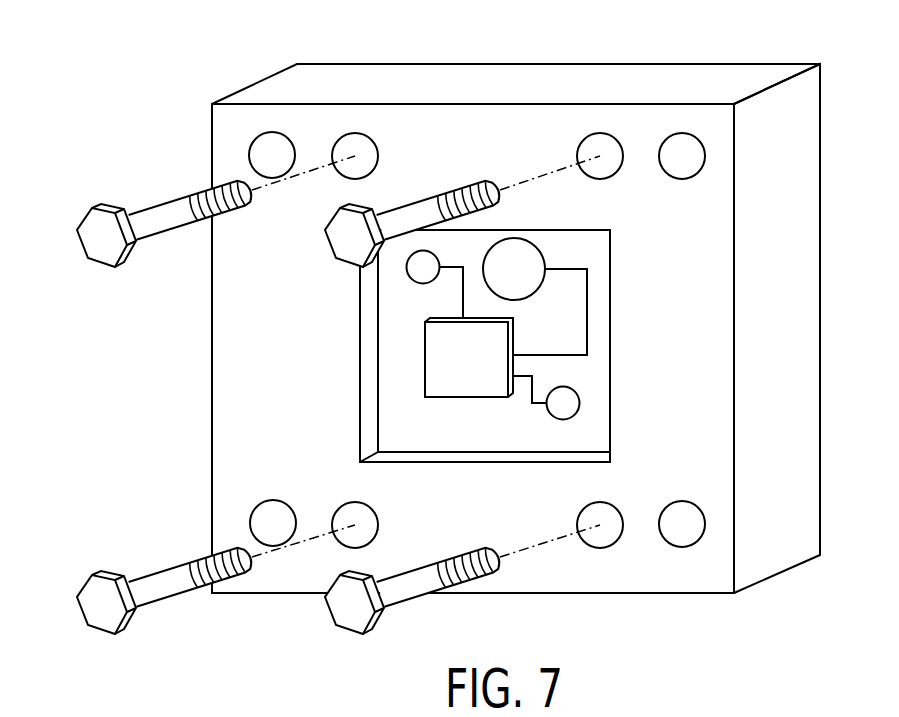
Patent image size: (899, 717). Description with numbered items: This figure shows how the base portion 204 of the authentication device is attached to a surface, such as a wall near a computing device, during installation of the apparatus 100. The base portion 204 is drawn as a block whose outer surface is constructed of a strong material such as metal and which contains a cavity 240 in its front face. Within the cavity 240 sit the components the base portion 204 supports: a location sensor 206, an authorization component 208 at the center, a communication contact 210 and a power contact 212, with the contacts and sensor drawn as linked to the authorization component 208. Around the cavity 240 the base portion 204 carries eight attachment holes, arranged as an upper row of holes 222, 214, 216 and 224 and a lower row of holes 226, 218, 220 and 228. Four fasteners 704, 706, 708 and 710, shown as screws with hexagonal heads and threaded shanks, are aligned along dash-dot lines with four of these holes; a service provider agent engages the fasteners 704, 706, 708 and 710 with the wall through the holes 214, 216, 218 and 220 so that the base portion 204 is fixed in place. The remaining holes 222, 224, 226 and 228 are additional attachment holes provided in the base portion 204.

The device assembly 100 is at (678, 48).
The base portion 204 is at (822, 173).
The location sensor 206 is at (541, 286).
The authorization component 208 is at (488, 377).
The communication contact 210 is at (411, 282).
The power contact 212 is at (558, 420).
The attachment hole 214 is at (380, 153).
The attachment hole 216 is at (580, 140).
The attachment hole 218 is at (380, 522).
The attachment hole 220 is at (580, 508).
The attachment hole 222 is at (290, 137).
The attachment hole 224 is at (682, 180).
The attachment hole 226 is at (272, 500).
The attachment hole 228 is at (682, 501).
The cavity 240 is at (413, 425).
The fastener 704 is at (103, 256).
The fastener 706 is at (347, 257).
The fastener 708 is at (103, 623).
The fastener 710 is at (353, 618).